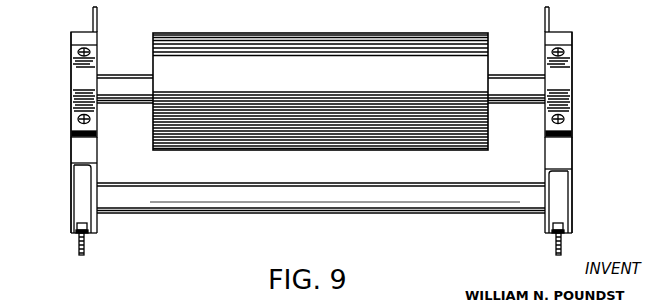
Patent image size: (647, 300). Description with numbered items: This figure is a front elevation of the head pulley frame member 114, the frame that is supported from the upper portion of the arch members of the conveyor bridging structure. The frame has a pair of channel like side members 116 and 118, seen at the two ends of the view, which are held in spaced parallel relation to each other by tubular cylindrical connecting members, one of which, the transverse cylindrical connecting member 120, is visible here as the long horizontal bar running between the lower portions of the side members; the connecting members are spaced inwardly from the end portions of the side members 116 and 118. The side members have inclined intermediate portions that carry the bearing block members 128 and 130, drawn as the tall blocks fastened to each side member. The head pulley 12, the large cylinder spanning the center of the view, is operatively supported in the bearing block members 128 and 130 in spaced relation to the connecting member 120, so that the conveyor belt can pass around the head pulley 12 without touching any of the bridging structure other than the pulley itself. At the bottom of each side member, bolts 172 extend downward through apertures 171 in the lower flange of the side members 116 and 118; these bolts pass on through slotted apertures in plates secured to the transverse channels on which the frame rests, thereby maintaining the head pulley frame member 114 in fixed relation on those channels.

The head pulley 12 is at (379, 33).
The head pulley frame member 114 is at (598, 38).
The channel like side member 116 is at (566, 170).
The channel like side member 118 is at (80, 163).
The tubular cylindrical connecting member 120 is at (115, 185).
The bearing block member 128 is at (567, 78).
The bearing block member 130 is at (70, 72).
The aperture 171 is at (90, 236).
The bolt 172 is at (86, 246).